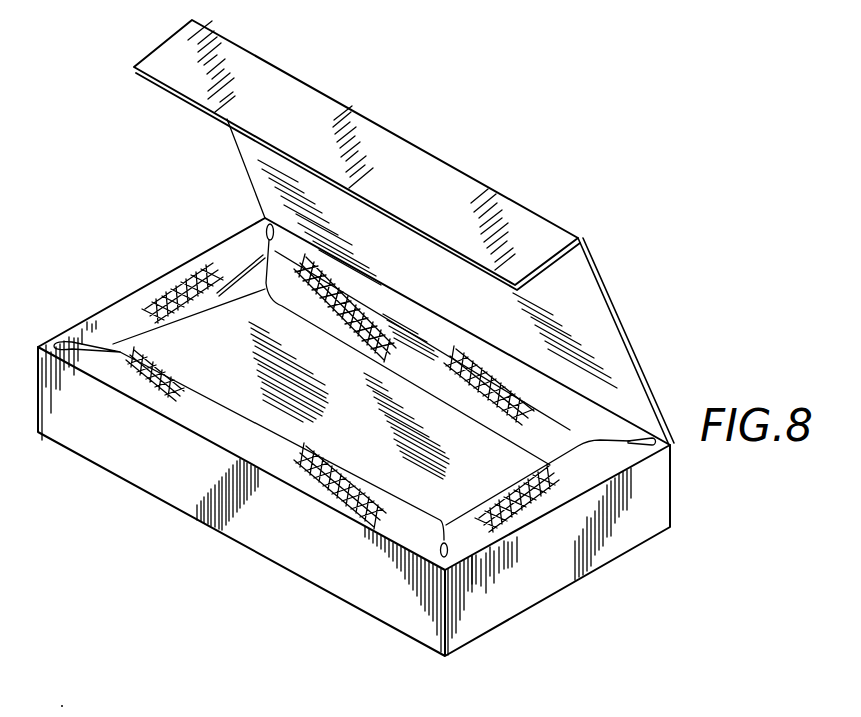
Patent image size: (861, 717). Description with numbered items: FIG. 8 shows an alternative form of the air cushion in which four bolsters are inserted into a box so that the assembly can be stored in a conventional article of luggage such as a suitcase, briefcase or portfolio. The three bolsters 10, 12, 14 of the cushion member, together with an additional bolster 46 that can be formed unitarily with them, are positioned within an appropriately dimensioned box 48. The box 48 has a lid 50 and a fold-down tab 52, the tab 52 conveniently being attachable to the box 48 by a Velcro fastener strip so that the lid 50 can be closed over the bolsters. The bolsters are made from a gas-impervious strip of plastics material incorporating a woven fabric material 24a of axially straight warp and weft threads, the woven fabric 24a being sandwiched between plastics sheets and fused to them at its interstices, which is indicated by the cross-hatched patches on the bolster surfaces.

The bolster 10 is at (357, 518).
The bolster 12 is at (193, 258).
The bolster 14 is at (592, 472).
The woven fabric material 24a is at (182, 295).
The additional bolster 46 is at (550, 437).
The box 48 is at (508, 582).
The lid 50 is at (623, 333).
The fold-down tab 52 is at (453, 195).